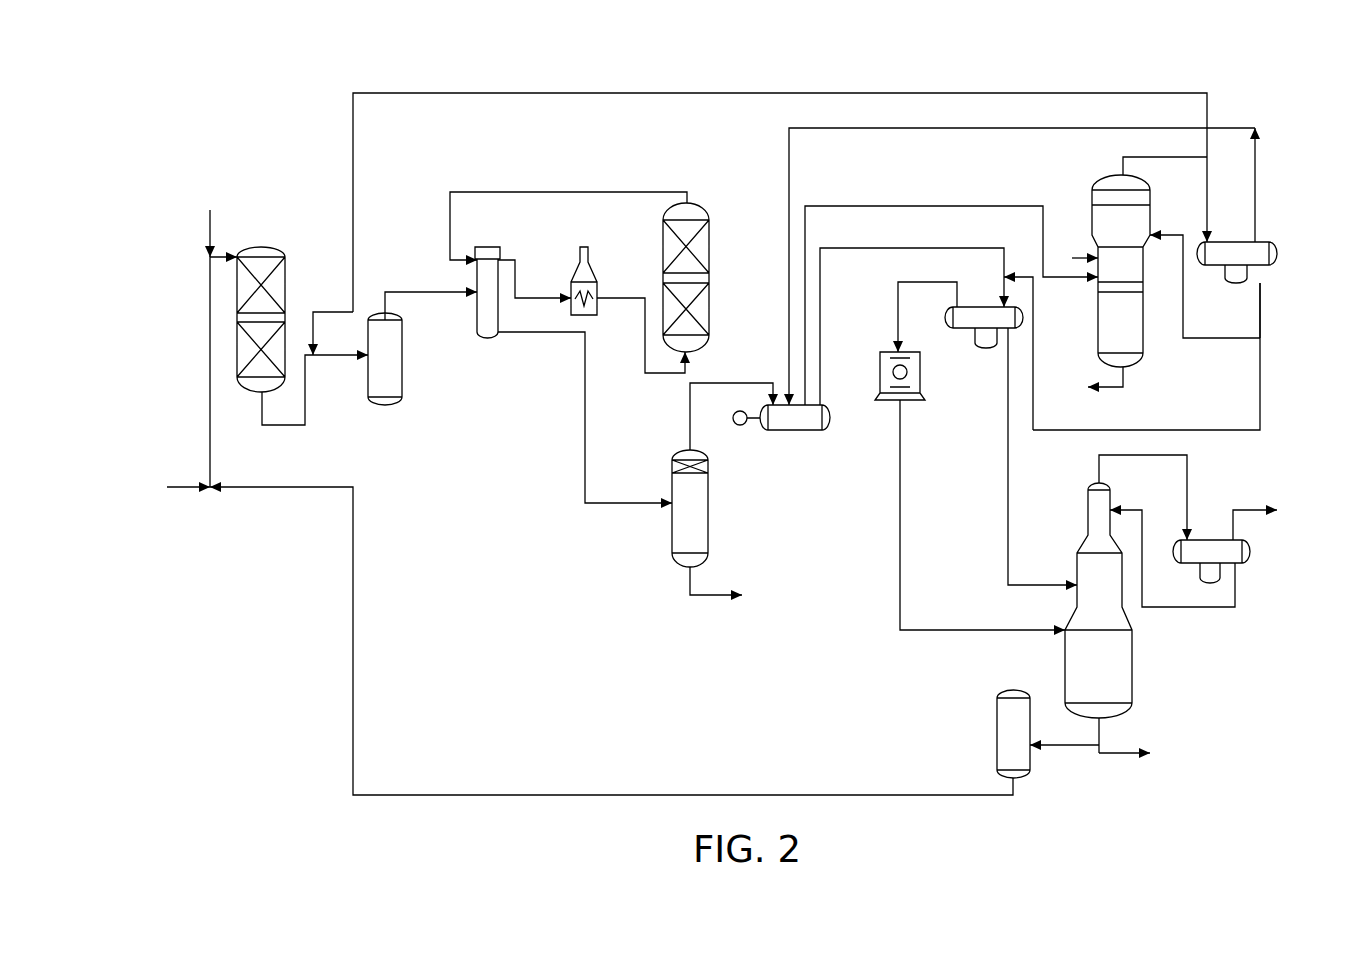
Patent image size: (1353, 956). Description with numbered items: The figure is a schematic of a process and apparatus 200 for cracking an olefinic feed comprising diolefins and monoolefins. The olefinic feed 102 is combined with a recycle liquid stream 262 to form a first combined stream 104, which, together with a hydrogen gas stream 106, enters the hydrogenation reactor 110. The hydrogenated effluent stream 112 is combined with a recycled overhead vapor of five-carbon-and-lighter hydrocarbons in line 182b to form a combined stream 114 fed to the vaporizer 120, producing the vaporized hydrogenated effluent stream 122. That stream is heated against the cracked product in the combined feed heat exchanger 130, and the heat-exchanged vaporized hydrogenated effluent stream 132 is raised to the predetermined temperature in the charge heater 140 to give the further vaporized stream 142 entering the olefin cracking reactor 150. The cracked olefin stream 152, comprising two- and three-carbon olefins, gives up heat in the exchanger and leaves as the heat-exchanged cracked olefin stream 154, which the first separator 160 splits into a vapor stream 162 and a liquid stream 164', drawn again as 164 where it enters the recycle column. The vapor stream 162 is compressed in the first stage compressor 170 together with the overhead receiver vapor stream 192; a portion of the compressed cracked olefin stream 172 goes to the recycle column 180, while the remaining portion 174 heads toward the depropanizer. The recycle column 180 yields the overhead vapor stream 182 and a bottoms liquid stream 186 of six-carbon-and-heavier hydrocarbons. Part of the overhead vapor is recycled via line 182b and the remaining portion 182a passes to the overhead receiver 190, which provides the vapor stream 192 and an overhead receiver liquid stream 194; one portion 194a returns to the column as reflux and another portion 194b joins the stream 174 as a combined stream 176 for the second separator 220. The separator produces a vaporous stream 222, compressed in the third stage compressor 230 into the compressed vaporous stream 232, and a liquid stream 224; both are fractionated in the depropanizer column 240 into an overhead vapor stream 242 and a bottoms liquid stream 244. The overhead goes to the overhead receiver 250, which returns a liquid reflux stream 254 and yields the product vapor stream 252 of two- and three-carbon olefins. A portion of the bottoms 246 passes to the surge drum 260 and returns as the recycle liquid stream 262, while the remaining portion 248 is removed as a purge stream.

The process and apparatus 200 is at (330, 122).
The olefinic feed 102 is at (200, 482).
The first combined stream 104 is at (206, 320).
The hydrogen gas stream 106 is at (210, 212).
The hydrogenation reactor 110 is at (255, 243).
The hydrogenated effluent stream 112 is at (276, 428).
The combined stream 114 is at (320, 358).
The vaporizer 120 is at (402, 377).
The vaporized hydrogenated effluent stream 122 is at (423, 290).
The combined feed heat exchanger 130 is at (487, 248).
The heat-exchanged vaporized hydrogenated effluent stream 132 is at (540, 299).
The charge heater 140 is at (613, 238).
The further vaporized stream 142 is at (640, 365).
The olefin cracking reactor 150 is at (712, 222).
The cracked olefin stream 152 is at (590, 192).
The heat-exchanged cracked olefin stream 154 is at (585, 364).
The first separator 160 is at (710, 515).
The vapor stream 162 is at (687, 402).
The liquid stream 164' is at (736, 579).
The liquid stream 164 is at (1074, 243).
The first stage compressor 170 is at (777, 432).
The compressed cracked olefin stream 172 is at (913, 205).
The remaining portion of compressed cracked olefin stream 174 is at (927, 247).
The combined stream 176 is at (1000, 288).
The recycle column 180 is at (1088, 192).
The overhead vapor stream 182 is at (1168, 157).
The remaining portion of overhead vapor stream 182a is at (1203, 203).
The recycled portion of overhead vapor stream 182b is at (722, 94).
The bottoms liquid stream 186 is at (1112, 393).
The overhead receiver 190 is at (1277, 255).
The overhead receiver vapor stream 192 is at (1257, 213).
The overhead receiver liquid stream 194 is at (1262, 323).
The reflux portion of overhead receiver liquid stream 194a is at (1245, 337).
The depropanizer-bound portion of overhead receiver liquid stream 194b is at (1258, 367).
The second separator 220 is at (957, 330).
The vaporous stream 222 is at (890, 322).
The liquid stream 224 is at (1005, 447).
The third stage compressor 230 is at (880, 382).
The compressed vaporous stream 232 is at (898, 500).
The depropanizer column 240 is at (1085, 522).
The overhead vapor stream 242 is at (1172, 456).
The bottoms liquid stream 244 is at (1099, 735).
The recycled portion of bottoms liquid stream 246 is at (1080, 745).
The purge portion of bottoms liquid stream 248 is at (1123, 757).
The overhead receiver 250 is at (1176, 562).
The product vapor stream 252 is at (1263, 510).
The liquid reflux stream 254 is at (1223, 612).
The surge drum 260 is at (997, 740).
The recycle liquid stream 262 is at (945, 795).